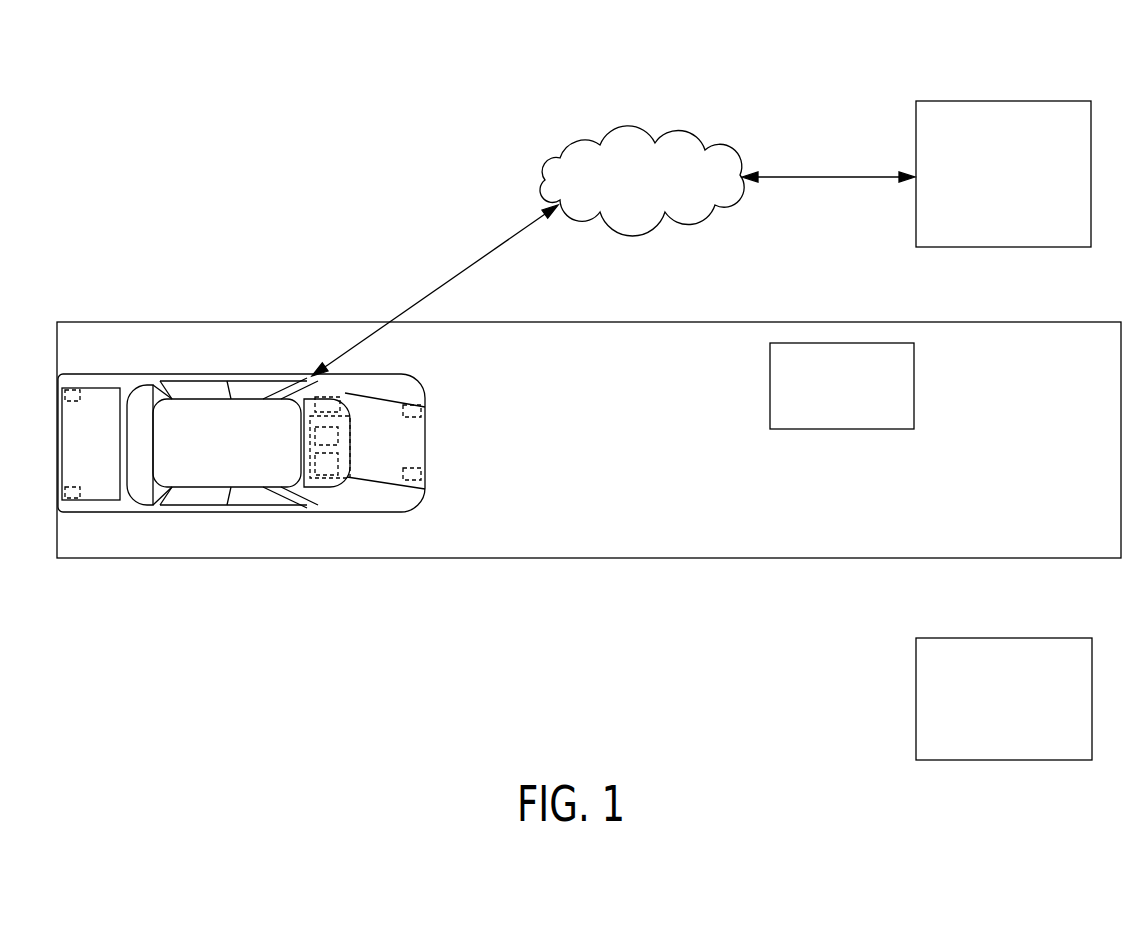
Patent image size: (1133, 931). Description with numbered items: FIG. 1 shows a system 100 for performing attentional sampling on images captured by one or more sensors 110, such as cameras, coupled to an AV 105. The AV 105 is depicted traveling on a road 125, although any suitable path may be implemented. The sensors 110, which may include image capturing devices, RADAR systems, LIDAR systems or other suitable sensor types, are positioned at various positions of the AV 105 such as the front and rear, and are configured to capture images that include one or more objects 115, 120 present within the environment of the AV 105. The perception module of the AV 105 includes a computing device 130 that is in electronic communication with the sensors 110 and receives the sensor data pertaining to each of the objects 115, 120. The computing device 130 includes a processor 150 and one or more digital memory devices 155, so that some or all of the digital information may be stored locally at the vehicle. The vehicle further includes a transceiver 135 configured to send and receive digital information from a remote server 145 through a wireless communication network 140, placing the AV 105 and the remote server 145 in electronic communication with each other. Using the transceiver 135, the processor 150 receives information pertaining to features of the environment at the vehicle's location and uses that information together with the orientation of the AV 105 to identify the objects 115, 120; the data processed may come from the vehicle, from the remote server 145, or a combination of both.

The system 100 is at (252, 163).
The AV 105 is at (140, 378).
The sensors 110 is at (64, 372).
The object 115 is at (841, 430).
The object 120 is at (915, 710).
The road 125 is at (187, 540).
The computing device 130 is at (352, 424).
The transceiver 135 is at (346, 396).
The wireless communication network 140 is at (540, 185).
The remote server 145 is at (996, 115).
The processor 150 is at (362, 491).
The digital memory devices 155 is at (347, 455).